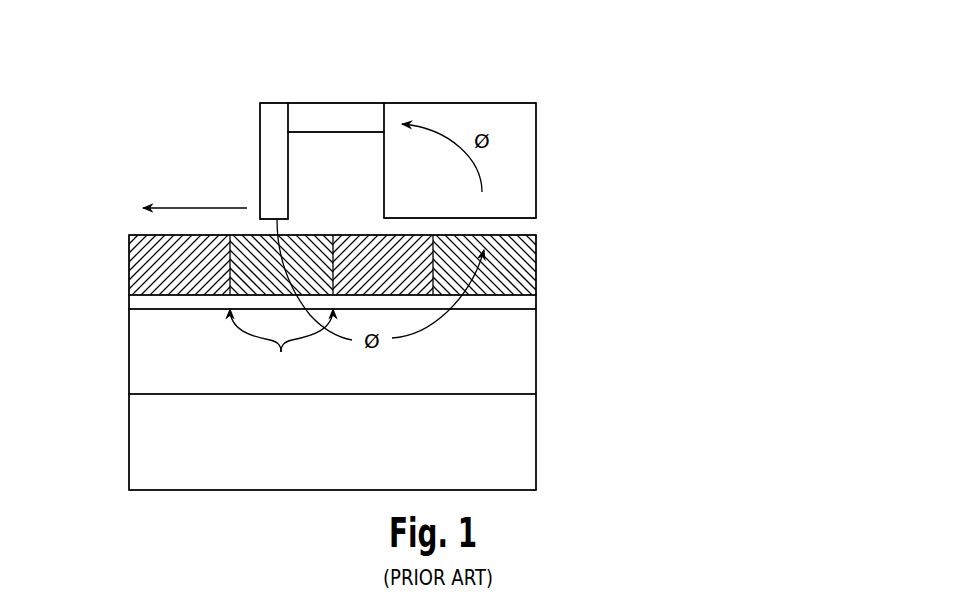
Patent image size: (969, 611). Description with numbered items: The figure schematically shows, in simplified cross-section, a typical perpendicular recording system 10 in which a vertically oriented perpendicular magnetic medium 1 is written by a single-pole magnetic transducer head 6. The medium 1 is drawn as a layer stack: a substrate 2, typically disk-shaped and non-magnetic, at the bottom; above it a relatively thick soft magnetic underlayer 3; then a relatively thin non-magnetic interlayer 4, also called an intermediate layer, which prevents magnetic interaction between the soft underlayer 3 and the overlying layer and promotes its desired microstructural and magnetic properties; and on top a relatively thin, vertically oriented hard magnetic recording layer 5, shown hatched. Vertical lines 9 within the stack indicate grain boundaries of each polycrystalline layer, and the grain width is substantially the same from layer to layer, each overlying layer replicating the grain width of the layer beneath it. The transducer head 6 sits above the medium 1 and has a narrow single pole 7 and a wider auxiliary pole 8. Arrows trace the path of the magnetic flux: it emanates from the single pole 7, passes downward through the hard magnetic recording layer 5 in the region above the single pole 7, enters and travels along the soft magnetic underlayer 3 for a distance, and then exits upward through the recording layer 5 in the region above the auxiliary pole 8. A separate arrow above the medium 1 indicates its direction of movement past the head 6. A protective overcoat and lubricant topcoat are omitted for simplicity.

The perpendicular magnetic medium 1 is at (98, 334).
The substrate 2 is at (536, 432).
The soft magnetic underlayer 3 is at (536, 340).
The non-magnetic interlayer 4 is at (536, 300).
The hard magnetic recording layer 5 is at (536, 270).
The single-pole magnetic transducer head 6 is at (318, 100).
The single pole 7 is at (257, 160).
The auxiliary pole 8 is at (540, 152).
The vertical lines indicating grain boundaries 9 is at (281, 344).
The perpendicular recording system 10 is at (552, 70).